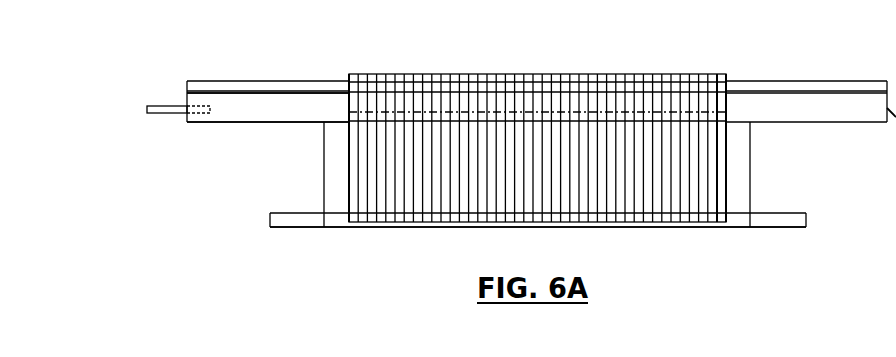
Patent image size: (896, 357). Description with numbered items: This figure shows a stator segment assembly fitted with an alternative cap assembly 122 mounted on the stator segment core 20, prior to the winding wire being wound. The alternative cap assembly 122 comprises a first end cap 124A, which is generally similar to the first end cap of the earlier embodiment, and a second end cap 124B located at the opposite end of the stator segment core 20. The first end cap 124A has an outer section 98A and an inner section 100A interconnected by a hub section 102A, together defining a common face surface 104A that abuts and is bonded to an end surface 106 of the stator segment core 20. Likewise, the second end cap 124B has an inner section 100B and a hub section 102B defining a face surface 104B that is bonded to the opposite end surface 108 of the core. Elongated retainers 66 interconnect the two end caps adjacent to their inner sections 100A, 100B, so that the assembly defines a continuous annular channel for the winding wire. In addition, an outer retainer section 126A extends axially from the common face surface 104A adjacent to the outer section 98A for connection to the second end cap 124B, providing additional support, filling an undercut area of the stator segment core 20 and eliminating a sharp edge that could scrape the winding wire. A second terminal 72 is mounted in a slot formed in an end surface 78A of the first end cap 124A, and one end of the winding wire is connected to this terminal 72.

The stator segment core 20 is at (485, 58).
The retainers 66 is at (527, 228).
The second terminal 72 is at (163, 117).
The end surface 78A is at (187, 98).
The outer section 98A is at (233, 113).
The inner section 100A is at (270, 214).
The inner section 100B is at (790, 228).
The hub section 102A is at (324, 153).
The hub section 102B is at (750, 163).
The face surface 104A is at (347, 195).
The face surface 104B is at (725, 202).
The end surface 106 is at (348, 115).
The end surface 108 is at (723, 103).
The alternative cap assembly 122 is at (300, 270).
The first end cap 124A is at (243, 72).
The second end cap 124B is at (798, 78).
The outer retainer section 126A is at (568, 113).